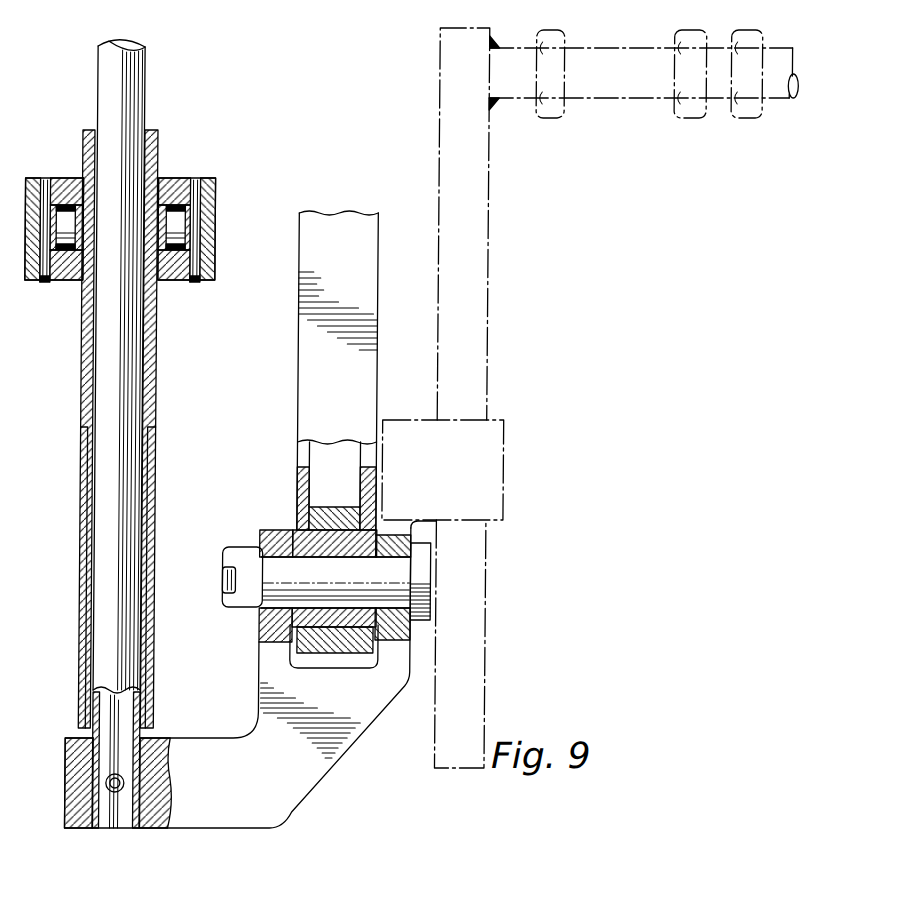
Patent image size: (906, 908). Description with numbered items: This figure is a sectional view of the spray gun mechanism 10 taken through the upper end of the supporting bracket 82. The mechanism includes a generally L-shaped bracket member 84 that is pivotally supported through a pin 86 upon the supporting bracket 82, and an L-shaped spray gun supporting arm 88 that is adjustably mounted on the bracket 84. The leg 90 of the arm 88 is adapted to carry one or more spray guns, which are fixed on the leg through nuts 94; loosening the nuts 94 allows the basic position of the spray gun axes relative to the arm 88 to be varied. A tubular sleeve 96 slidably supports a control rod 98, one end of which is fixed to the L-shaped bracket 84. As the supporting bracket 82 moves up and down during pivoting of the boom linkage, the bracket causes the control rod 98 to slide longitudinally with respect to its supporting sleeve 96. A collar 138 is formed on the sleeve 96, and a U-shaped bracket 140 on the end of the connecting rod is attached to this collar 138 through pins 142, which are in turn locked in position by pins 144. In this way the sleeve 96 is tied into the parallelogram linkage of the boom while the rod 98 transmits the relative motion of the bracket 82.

The spray gun mechanism 10 is at (219, 260).
The supporting bracket 82 is at (354, 238).
The L-shaped bracket member 84 is at (299, 785).
The pin 86 is at (294, 572).
The L-shaped spray gun supporting arm 88 is at (490, 328).
The leg 90 is at (514, 100).
The nuts 94 is at (565, 105).
The tubular sleeve 96 is at (151, 362).
The control rod 98 is at (116, 73).
The collar 138 is at (163, 183).
The U-shaped bracket 140 is at (213, 182).
The pins 142 is at (60, 222).
The pins 144 is at (47, 283).